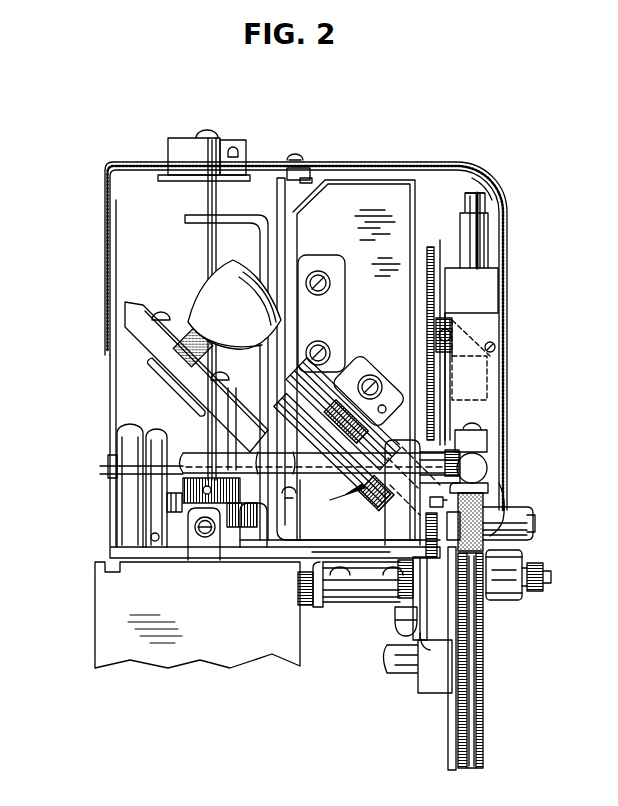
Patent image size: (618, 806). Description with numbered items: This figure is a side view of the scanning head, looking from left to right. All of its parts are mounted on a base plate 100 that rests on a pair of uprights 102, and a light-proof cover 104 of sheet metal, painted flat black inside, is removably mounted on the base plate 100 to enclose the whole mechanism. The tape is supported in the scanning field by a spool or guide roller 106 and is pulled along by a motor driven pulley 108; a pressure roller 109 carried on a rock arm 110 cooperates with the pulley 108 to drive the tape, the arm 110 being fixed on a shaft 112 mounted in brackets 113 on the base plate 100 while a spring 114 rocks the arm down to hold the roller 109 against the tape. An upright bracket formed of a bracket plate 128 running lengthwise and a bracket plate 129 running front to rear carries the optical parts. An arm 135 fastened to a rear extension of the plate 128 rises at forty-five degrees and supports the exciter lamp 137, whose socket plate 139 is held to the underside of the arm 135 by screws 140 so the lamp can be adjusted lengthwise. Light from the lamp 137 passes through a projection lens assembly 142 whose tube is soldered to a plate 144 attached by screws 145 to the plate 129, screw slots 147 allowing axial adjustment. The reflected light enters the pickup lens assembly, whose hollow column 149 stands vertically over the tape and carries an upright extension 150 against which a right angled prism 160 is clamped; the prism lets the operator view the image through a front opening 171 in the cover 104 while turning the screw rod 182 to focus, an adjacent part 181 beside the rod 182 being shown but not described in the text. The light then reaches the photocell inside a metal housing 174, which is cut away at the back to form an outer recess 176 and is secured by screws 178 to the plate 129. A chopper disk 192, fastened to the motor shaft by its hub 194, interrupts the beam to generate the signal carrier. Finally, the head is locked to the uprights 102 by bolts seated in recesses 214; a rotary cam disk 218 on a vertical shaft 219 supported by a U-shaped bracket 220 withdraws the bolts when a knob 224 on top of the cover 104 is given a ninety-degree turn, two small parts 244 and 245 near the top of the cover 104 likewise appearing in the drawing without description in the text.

The base plate 100 is at (178, 560).
The uprights 102 is at (100, 625).
The light-proof cover 104 is at (368, 163).
The spool or guide roller 106 is at (505, 605).
The motor driven pulley 108 is at (490, 717).
The pressure roller 109 is at (483, 517).
The rock arm 110 is at (487, 462).
The shaft 112 is at (312, 480).
The brackets 113 is at (125, 504).
The spring 114 is at (170, 470).
The bracket plate 128 is at (280, 245).
The bracket plate 129 is at (290, 190).
The arm 135 is at (238, 410).
The exciter lamp 137 is at (196, 302).
The plate 139 is at (150, 345).
The screws 140 is at (162, 312).
The projection lens assembly 142 is at (362, 502).
The plate 144 is at (385, 380).
The screws 145 is at (360, 375).
The screw slots 147 is at (390, 409).
The hollow column 149 is at (485, 385).
The upright extension 150 is at (495, 292).
The right angled prism 160 is at (492, 326).
The front opening 171 is at (497, 347).
The metal housing 174 is at (397, 198).
The outer recess 176 is at (340, 258).
The screws 178 is at (314, 296).
The post 181 is at (488, 240).
The screw rod 182 is at (487, 205).
The chopper disk 192 is at (446, 242).
The hub 194 is at (440, 325).
The holes or recesses 214 is at (206, 540).
The rotary cam disk 218 is at (262, 545).
The vertical shaft 219 is at (205, 196).
The U-shaped bracket 220 is at (244, 215).
The knob 224 is at (192, 138).
The screw 244 is at (297, 158).
The screw 245 is at (280, 205).